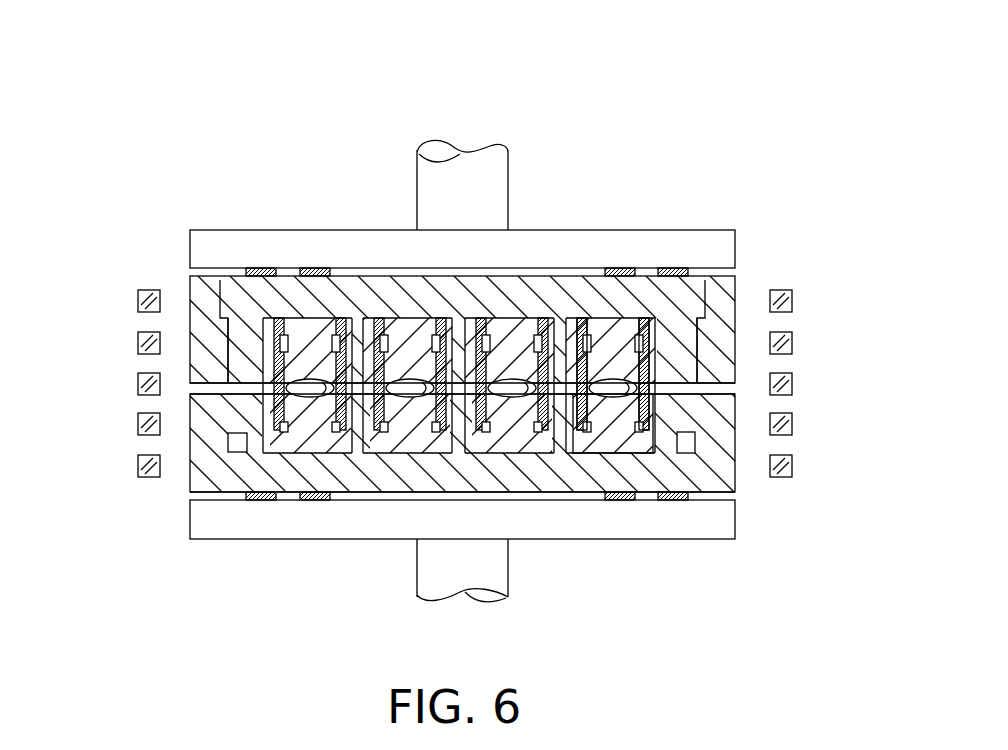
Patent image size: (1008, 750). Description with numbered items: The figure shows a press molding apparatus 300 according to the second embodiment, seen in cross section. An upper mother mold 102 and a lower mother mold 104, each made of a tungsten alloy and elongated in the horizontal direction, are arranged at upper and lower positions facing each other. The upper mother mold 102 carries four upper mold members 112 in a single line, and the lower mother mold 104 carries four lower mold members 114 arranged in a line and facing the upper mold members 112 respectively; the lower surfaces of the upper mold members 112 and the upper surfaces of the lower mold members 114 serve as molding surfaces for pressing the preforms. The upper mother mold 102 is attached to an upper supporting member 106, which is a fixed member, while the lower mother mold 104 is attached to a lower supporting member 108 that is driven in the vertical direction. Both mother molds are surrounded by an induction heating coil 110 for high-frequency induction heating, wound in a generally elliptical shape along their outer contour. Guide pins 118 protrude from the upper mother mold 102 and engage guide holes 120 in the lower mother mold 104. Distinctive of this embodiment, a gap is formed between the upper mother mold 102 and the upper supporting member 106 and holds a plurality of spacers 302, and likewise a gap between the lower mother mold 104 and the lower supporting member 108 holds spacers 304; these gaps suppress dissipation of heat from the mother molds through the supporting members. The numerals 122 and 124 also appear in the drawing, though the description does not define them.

The press molding apparatus 300 is at (712, 115).
The upper mother mold 102 is at (735, 312).
The lower mother mold 104 is at (720, 432).
The upper supporting member 106 is at (386, 255).
The lower supporting member 108 is at (403, 528).
The induction heating coil 110 is at (138, 338).
The upper mold member 112 is at (600, 325).
The lower mold member 114 is at (612, 448).
The guide pin 118 is at (222, 325).
The guide hole 120 is at (227, 490).
The gap between blocks 122 is at (563, 401).
The passage 124 is at (360, 482).
The spacer 302 is at (306, 268).
The spacer 304 is at (672, 502).